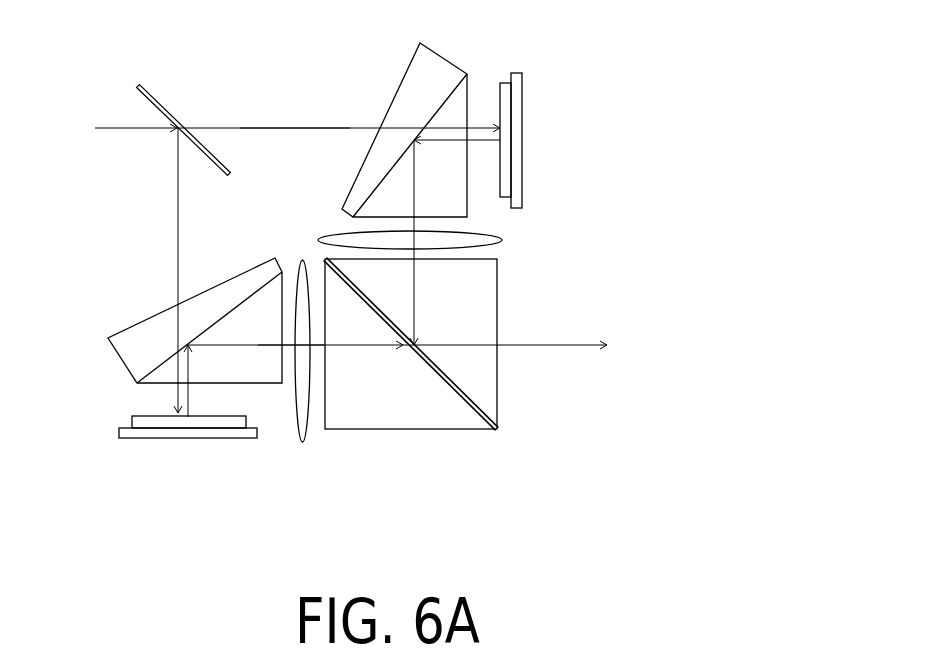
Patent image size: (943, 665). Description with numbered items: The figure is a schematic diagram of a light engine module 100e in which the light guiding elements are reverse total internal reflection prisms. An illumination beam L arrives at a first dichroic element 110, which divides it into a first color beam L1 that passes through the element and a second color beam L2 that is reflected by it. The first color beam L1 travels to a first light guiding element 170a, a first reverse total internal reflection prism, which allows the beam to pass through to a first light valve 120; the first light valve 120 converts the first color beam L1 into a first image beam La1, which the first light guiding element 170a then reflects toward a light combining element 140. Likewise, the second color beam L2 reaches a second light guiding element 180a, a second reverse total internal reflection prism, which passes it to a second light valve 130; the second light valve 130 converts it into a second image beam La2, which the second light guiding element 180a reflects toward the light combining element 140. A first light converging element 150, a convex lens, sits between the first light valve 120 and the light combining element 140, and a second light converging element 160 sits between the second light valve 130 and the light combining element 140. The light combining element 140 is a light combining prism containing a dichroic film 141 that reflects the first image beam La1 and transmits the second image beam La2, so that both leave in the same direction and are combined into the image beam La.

The light engine module 100e is at (603, 82).
The first dichroic element 110 is at (158, 90).
The first light valve 120 is at (517, 124).
The second light valve 130 is at (183, 438).
The light combining element 140 is at (428, 438).
The dichroic film 141 is at (489, 430).
The first light converging element 150 is at (483, 242).
The second light converging element 160 is at (305, 442).
The first light guiding element 170a is at (463, 58).
The second light guiding element 180a is at (113, 377).
The illumination beam L is at (112, 128).
The first color beam L1 is at (285, 128).
The second color beam L2 is at (178, 225).
The image beam La is at (545, 347).
The first image beam La1 is at (415, 278).
The second image beam La2 is at (360, 345).